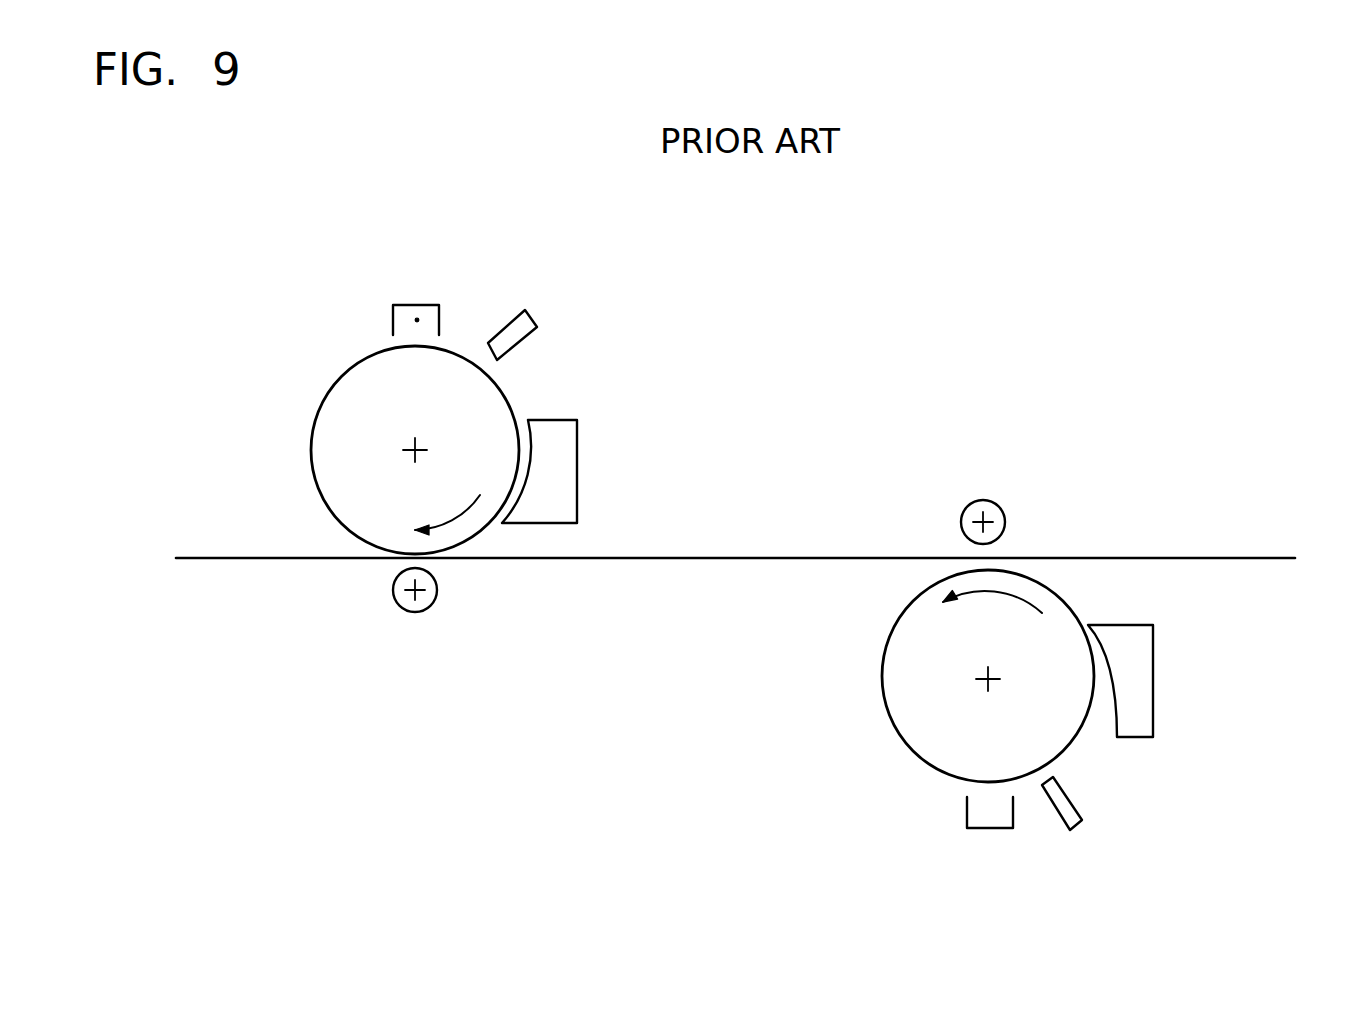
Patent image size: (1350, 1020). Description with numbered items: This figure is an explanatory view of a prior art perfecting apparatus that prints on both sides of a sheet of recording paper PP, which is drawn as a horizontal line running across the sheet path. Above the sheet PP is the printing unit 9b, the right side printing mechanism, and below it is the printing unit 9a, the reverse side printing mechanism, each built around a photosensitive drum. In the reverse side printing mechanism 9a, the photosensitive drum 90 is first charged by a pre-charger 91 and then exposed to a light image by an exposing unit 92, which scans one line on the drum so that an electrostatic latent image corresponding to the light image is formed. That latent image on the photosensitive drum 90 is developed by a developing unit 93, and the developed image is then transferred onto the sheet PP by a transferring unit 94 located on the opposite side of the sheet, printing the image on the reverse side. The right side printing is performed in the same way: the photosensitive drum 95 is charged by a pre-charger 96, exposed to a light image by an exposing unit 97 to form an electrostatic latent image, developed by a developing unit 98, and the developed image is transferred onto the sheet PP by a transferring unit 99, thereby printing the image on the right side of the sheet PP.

The printing unit 9a is at (1145, 820).
The printing unit 9b is at (323, 323).
The photosensitive drum 90 is at (937, 757).
The pre-charger 91 is at (993, 828).
The exposing unit 92 is at (1072, 830).
The developing unit 93 is at (1155, 683).
The transferring unit 94 is at (988, 499).
The photosensitive drum 95 is at (313, 431).
The pre-charger 96 is at (422, 303).
The exposing unit 97 is at (513, 313).
The developing unit 98 is at (577, 483).
The transferring unit 99 is at (423, 614).
The sheet of recording paper PP is at (1200, 557).